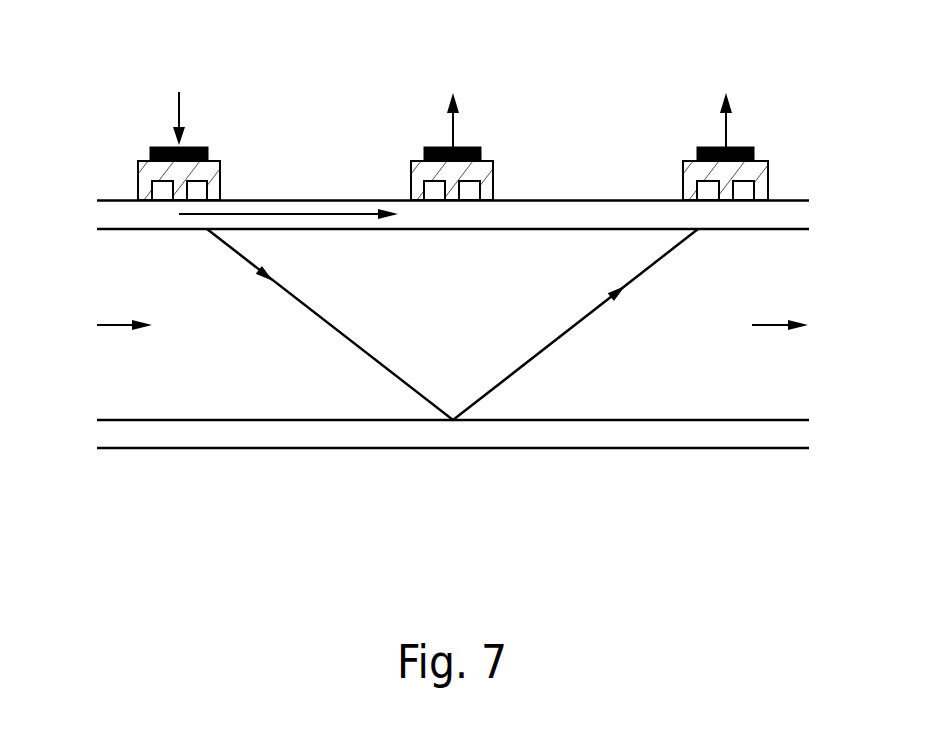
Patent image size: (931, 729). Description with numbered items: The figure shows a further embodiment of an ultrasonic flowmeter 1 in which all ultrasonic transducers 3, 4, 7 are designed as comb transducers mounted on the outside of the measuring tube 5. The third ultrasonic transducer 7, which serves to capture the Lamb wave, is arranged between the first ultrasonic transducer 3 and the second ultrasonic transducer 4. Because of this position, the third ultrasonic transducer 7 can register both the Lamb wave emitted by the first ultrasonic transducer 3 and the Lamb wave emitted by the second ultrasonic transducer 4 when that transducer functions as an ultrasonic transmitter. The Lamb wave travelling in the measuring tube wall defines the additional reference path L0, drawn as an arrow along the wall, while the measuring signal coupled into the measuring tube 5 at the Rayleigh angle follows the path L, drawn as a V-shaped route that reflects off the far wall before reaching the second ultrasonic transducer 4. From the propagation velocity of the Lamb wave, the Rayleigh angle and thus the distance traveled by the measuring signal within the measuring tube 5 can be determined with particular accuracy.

The ultrasonic flowmeter 1 is at (120, 61).
The first ultrasonic transducer 3 is at (222, 177).
The second ultrasonic transducer 4 is at (690, 160).
The third ultrasonic transducer 7 is at (490, 160).
The measuring tube 5 is at (272, 435).
The reference path L0 is at (345, 214).
The ultrasonic signal path L is at (555, 342).